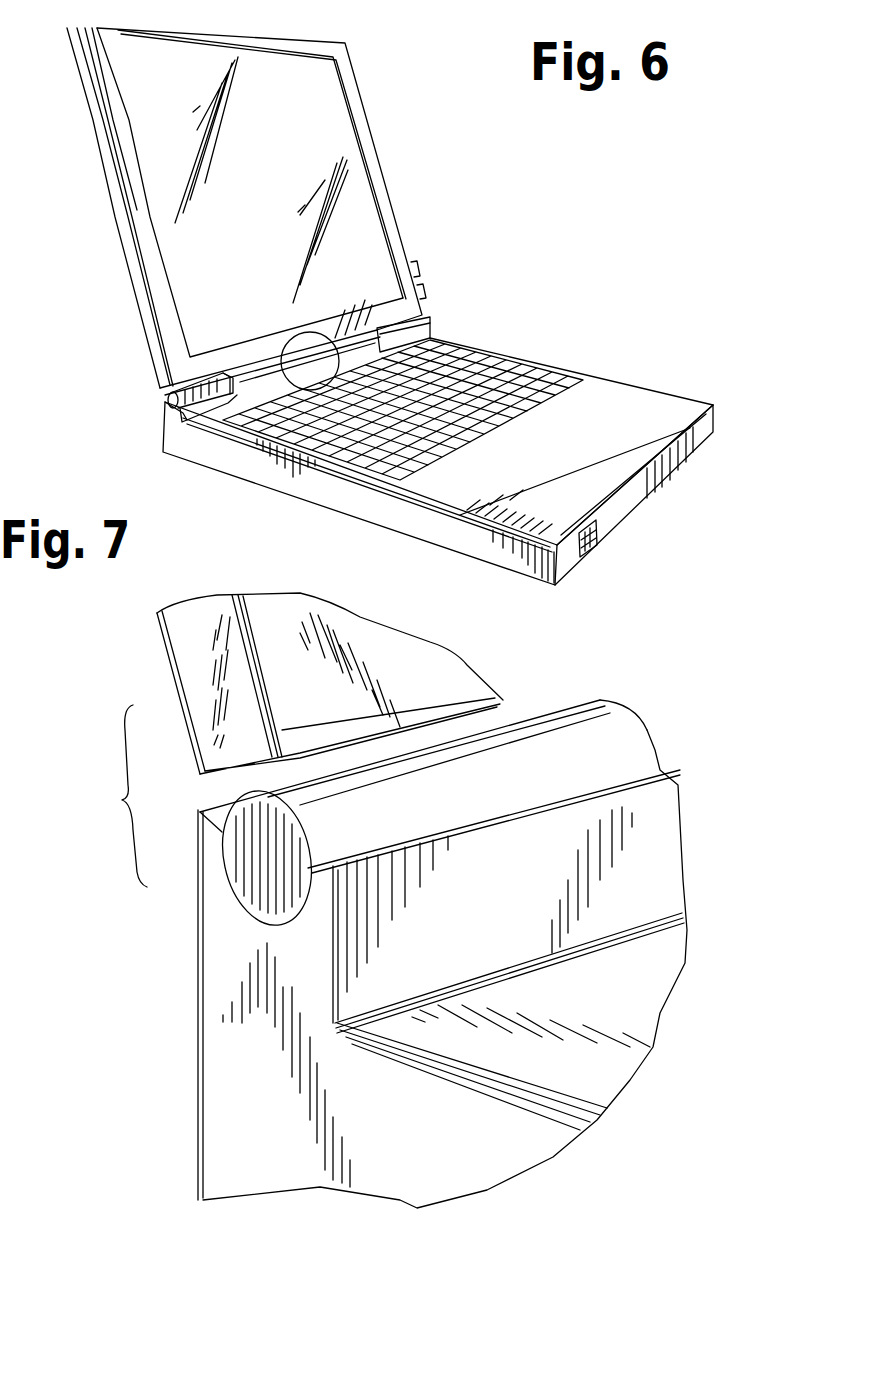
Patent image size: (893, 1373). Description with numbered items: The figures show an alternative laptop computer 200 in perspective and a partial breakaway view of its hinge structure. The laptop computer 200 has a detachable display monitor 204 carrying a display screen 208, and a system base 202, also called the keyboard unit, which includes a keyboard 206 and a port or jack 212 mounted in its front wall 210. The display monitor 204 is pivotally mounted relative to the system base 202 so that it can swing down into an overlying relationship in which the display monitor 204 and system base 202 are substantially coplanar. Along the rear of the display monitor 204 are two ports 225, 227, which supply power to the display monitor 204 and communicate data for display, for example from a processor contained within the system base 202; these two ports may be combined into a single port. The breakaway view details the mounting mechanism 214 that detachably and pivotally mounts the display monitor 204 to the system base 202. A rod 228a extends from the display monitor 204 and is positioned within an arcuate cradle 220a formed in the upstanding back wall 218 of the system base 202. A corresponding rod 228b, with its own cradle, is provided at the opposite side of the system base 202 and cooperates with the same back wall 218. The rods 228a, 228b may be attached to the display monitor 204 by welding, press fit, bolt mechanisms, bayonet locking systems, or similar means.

In FIG. 6, the laptop computer 200 is at (478, 199).
In FIG. 6, the system base 202 is at (637, 407).
In FIG. 7, the system base 202 is at (238, 1135).
In FIG. 6, the display monitor 204 is at (378, 178).
In FIG. 7, the display monitor 204 is at (193, 643).
In FIG. 6, the keyboard 206 is at (518, 353).
In FIG. 6, the display screen 208 is at (318, 101).
In FIG. 6, the front wall 210 is at (633, 506).
In FIG. 6, the port or jack 212 is at (578, 557).
In FIG. 7, the mounting mechanism 214 is at (113, 796).
In FIG. 7, the back wall 218 is at (493, 912).
In FIG. 7, the arcuate cradle 220a is at (250, 912).
In FIG. 6, the port 225 is at (413, 267).
In FIG. 6, the port 227 is at (423, 293).
In FIG. 6, the rod 228a is at (168, 398).
In FIG. 7, the rod 228a is at (640, 737).
In FIG. 6, the rod 228b is at (440, 313).